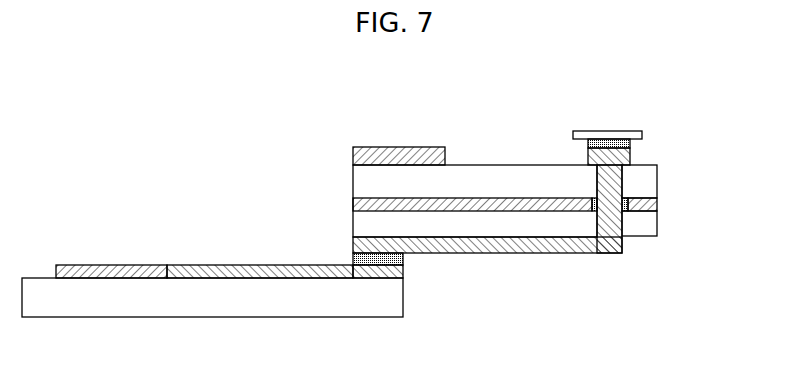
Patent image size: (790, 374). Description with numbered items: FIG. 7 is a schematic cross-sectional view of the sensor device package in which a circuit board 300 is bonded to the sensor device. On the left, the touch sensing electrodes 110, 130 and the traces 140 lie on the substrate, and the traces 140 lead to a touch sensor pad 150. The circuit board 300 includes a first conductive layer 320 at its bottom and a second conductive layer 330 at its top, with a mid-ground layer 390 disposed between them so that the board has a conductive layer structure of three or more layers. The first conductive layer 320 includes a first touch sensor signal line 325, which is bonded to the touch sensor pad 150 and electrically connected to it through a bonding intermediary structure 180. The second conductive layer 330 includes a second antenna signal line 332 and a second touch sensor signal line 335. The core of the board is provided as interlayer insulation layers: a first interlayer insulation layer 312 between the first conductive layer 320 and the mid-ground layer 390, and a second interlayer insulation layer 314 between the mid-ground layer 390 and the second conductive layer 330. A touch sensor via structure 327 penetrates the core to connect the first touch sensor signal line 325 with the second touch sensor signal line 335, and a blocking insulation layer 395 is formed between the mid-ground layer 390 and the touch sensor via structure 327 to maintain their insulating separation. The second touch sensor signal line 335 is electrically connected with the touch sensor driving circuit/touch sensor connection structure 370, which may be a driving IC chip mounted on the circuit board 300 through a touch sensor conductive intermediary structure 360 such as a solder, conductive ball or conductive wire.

The touch sensing electrode 110 is at (99, 228).
The touch sensing electrode 130 is at (133, 268).
The trace 140 is at (212, 270).
The touch sensor pad 150 is at (372, 270).
The bonding intermediary structure 180 is at (358, 258).
The circuit board 300 is at (502, 203).
The first interlayer insulation layer 312 is at (628, 225).
The second interlayer insulation layer 314 is at (628, 172).
The first conductive layer 320 is at (487, 284).
The first touch sensor signal line 325 is at (512, 245).
The touch sensor via structure 327 is at (612, 182).
The second conductive layer 330 is at (485, 120).
The second antenna signal line 332 is at (402, 150).
The second touch sensor signal line 335 is at (618, 144).
The touch sensor conductive intermediary structure 360 is at (588, 142).
The touch sensor driving circuit/touch sensor connection structure 370 is at (642, 134).
The mid-ground layer 390 is at (405, 200).
The blocking insulation layer 395 is at (598, 214).